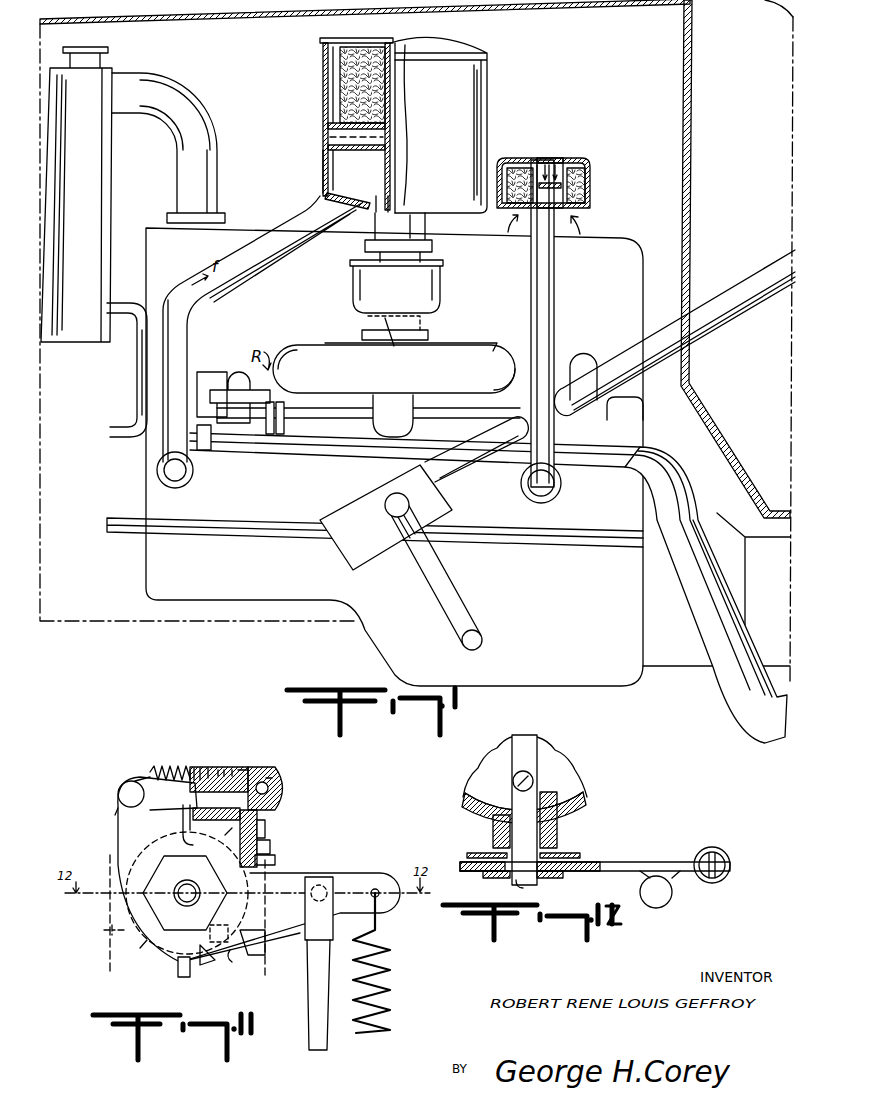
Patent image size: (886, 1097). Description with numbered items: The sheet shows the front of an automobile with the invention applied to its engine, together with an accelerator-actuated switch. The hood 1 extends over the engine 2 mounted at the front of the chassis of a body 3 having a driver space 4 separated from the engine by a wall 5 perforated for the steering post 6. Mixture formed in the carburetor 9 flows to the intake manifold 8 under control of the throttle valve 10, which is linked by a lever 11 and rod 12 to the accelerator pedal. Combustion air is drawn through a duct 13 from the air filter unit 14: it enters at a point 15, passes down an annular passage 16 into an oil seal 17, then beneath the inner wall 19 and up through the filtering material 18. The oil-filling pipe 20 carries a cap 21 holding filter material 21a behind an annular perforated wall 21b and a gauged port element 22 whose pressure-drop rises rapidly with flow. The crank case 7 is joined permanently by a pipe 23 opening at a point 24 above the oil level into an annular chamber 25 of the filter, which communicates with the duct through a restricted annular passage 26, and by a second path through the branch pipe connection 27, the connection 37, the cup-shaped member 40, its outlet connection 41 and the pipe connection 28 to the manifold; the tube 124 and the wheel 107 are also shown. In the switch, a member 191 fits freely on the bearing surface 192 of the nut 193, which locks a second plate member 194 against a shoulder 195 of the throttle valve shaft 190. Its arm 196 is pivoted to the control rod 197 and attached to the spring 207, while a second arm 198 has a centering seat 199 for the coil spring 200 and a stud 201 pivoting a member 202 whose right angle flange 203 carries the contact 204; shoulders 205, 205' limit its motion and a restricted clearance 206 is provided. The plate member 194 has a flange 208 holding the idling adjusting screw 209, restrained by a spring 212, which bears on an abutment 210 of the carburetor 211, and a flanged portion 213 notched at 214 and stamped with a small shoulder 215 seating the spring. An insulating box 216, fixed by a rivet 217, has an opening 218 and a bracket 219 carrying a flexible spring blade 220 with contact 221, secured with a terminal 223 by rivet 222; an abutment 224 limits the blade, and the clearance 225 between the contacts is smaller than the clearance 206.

In FIG. 1, the hood 1 is at (195, 19).
In FIG. 1, the engine 2 is at (158, 240).
In FIG. 1, the body 3 is at (781, 517).
In FIG. 1, the space 4 is at (752, 162).
In FIG. 1, the wall 5 is at (687, 112).
In FIG. 1, the steering post 6 is at (721, 320).
In FIG. 1, the crank case 7 is at (138, 516).
In FIG. 1, the intake manifold 8 is at (315, 346).
In FIG. 1, the carburetor 9 is at (402, 299).
In FIG. 1, the throttle valve 10 is at (420, 329).
In FIG. 11, the throttle valve 10 is at (107, 930).
In FIG. 12, the throttle valve 10 is at (487, 776).
In FIG. 1, the lever 11 is at (372, 324).
In FIG. 1, the rod 12 is at (476, 338).
In FIG. 1, the duct 13 is at (418, 222).
In FIG. 1, the air filter unit 14 is at (450, 125).
In FIG. 1, the air entry point 15 is at (344, 113).
In FIG. 1, the annular passage 16 is at (330, 96).
In FIG. 1, the oil seal 17 is at (330, 132).
In FIG. 1, the filtering material 18 is at (350, 45).
In FIG. 1, the inner wall 19 is at (330, 80).
In FIG. 1, the oil-filling pipe 20 is at (555, 306).
In FIG. 1, the cap 21 is at (590, 178).
In FIG. 1, the filter material 21a is at (590, 193).
In FIG. 1, the annular perforated wall 21b is at (562, 160).
In FIG. 1, the gauged port element 22 is at (548, 165).
In FIG. 1, the pipe 23 is at (272, 258).
In FIG. 1, the crank case opening point 24 is at (157, 465).
In FIG. 1, the annular chamber 25 is at (328, 158).
In FIG. 1, the restricted annular passage 26 is at (376, 186).
In FIG. 1, the branch pipe connection 27 is at (197, 452).
In FIG. 1, the pipe connection 28 is at (305, 452).
In FIG. 1, the connection 37 is at (228, 424).
In FIG. 1, the cup-shaped member 40 is at (268, 438).
In FIG. 1, the outlet connection 41 is at (281, 438).
In FIG. 1, the tube 124 is at (410, 114).
In FIG. 12, the wheel 107 is at (730, 880).
In FIG. 11, the throttle valve shaft 190 is at (184, 886).
In FIG. 12, the throttle valve shaft 190 is at (533, 840).
In FIG. 11, the member 191 is at (142, 953).
In FIG. 12, the member 191 is at (472, 878).
In FIG. 12, the bearing surface 192 is at (522, 885).
In FIG. 11, the nut 193 is at (206, 919).
In FIG. 12, the nut 193 is at (490, 878).
In FIG. 11, the second plate member 194 is at (225, 838).
In FIG. 12, the second plate member 194 is at (470, 853).
In FIG. 12, the shoulder 195 is at (572, 860).
In FIG. 11, the arm 196 is at (358, 873).
In FIG. 12, the arm 196 is at (636, 877).
In FIG. 11, the control rod 197 is at (306, 990).
In FIG. 12, the control rod 197 is at (664, 900).
In FIG. 11, the second arm 198 is at (120, 850).
In FIG. 11, the centering seat 199 is at (135, 779).
In FIG. 11, the coil spring 200 is at (156, 768).
In FIG. 11, the stud 201 is at (118, 793).
In FIG. 11, the pivoted member 202 is at (118, 812).
In FIG. 11, the right angle flange 203 is at (218, 768).
In FIG. 11, the electrical contact 204 is at (224, 768).
In FIG. 11, the shoulder 205 is at (189, 820).
In FIG. 11, the shoulder 205' is at (218, 745).
In FIG. 11, the restricted clearance 206 is at (190, 840).
In FIG. 11, the spring 207 is at (390, 968).
In FIG. 11, the flange 208 is at (208, 965).
In FIG. 11, the idling adjusting screw 209 is at (265, 953).
In FIG. 11, the abutment 210 is at (178, 968).
In FIG. 12, the carburetor 211 is at (572, 818).
In FIG. 11, the spring 212 is at (233, 963).
In FIG. 11, the flanged portion 213 is at (200, 766).
In FIG. 11, the notch 214 is at (190, 768).
In FIG. 11, the small shoulder 215 is at (194, 766).
In FIG. 11, the insulating box 216 is at (250, 771).
In FIG. 11, the rivet 217 is at (272, 790).
In FIG. 11, the opening 218 is at (258, 820).
In FIG. 11, the bracket 219 is at (265, 832).
In FIG. 11, the flexible spring blade 220 is at (270, 793).
In FIG. 11, the electrical contact 221 is at (268, 780).
In FIG. 11, the rivet 222 is at (270, 847).
In FIG. 11, the terminal 223 is at (276, 861).
In FIG. 11, the abutment 224 is at (248, 768).
In FIG. 11, the clearance 225 is at (232, 768).